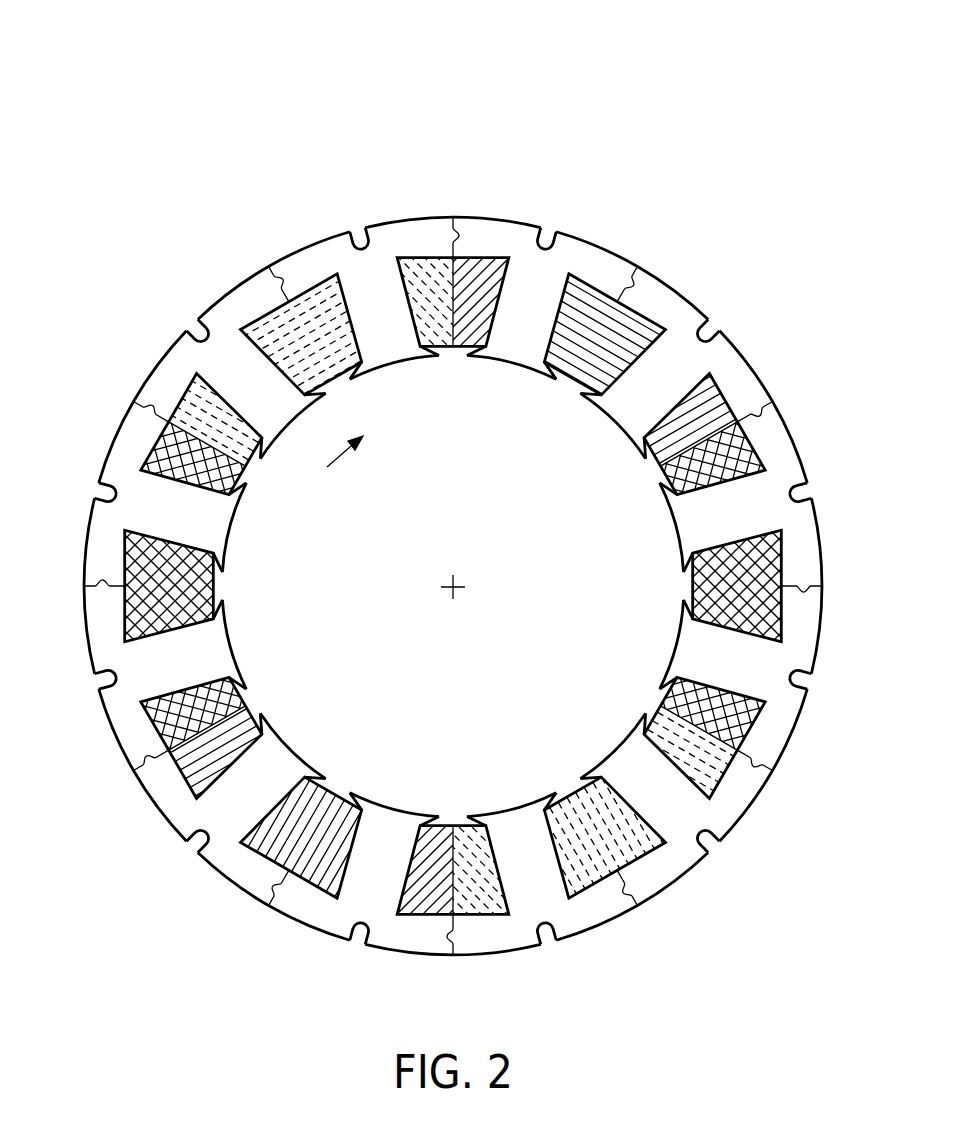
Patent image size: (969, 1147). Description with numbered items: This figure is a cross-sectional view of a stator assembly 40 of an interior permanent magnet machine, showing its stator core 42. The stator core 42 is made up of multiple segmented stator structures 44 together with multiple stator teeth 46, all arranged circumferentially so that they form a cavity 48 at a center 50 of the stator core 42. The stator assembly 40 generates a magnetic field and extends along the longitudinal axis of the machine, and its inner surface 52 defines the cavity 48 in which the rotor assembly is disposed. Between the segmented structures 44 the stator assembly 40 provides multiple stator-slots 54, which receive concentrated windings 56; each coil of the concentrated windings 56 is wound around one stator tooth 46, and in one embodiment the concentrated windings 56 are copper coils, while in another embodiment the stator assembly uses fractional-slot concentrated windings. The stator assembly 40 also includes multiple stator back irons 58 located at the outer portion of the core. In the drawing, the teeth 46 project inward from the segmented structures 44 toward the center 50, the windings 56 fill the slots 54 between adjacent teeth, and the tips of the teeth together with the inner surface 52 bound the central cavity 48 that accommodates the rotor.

The stator assembly 40 is at (783, 90).
The stator core 42 is at (806, 477).
The segmented stator structures 44 is at (500, 230).
The stator teeth 46 is at (255, 390).
The cavity 48 is at (337, 462).
The center 50 is at (455, 585).
The inner surface 52 is at (395, 367).
The stator-slots 54 is at (337, 800).
The concentrated windings 56 is at (633, 337).
The stator back irons 58 is at (100, 635).